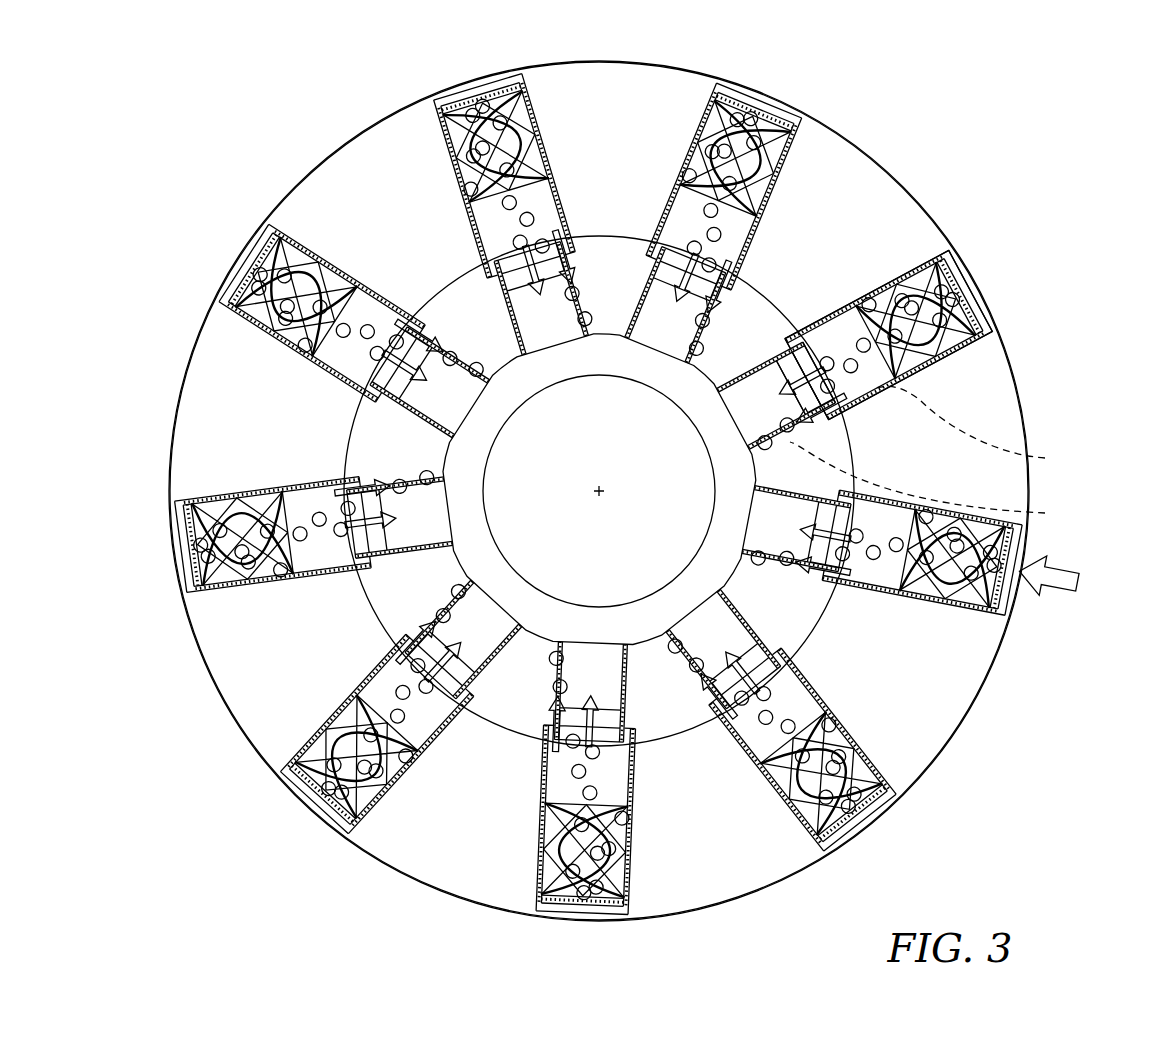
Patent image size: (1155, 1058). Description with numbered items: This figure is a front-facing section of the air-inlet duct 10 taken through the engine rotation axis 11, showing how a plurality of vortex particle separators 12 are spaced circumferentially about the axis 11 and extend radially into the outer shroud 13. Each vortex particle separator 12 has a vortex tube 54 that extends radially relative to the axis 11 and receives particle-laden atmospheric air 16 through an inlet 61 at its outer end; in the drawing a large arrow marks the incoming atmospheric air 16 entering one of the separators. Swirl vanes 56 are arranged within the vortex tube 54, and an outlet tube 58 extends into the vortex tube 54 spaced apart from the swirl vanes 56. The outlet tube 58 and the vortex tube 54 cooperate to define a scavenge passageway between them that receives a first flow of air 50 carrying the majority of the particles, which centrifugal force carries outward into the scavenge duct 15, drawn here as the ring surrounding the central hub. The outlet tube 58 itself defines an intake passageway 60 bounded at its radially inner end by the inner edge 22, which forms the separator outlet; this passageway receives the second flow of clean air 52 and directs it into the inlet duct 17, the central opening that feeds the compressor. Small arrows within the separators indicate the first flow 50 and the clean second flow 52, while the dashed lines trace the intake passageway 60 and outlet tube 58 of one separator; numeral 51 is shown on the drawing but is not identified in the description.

The air-inlet duct 10 is at (272, 110).
The axis 11 is at (597, 490).
The vortex particle separator 12 is at (850, 311).
The outer shroud 13 is at (170, 432).
The scavenge duct 15 is at (818, 618).
The atmospheric air 16 is at (1058, 566).
The inlet duct 17 is at (730, 572).
The inner edge 22 is at (725, 410).
The first flow of air 50 is at (840, 398).
The channel side wall 51 is at (805, 330).
The second flow of air 52 is at (790, 355).
The vortex tube 54 is at (955, 340).
The swirl vanes 56 is at (895, 268).
The outlet tube 58 is at (935, 485).
The intake passageway 60 is at (978, 430).
The inlet 61 is at (968, 280).